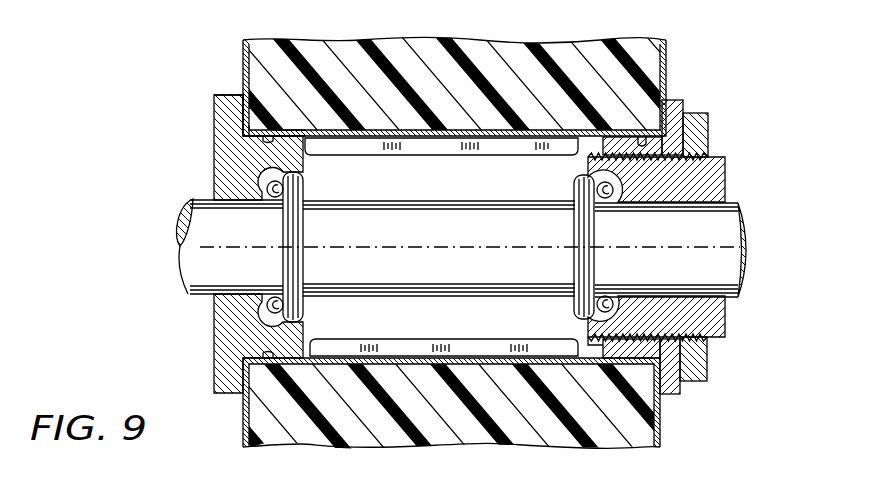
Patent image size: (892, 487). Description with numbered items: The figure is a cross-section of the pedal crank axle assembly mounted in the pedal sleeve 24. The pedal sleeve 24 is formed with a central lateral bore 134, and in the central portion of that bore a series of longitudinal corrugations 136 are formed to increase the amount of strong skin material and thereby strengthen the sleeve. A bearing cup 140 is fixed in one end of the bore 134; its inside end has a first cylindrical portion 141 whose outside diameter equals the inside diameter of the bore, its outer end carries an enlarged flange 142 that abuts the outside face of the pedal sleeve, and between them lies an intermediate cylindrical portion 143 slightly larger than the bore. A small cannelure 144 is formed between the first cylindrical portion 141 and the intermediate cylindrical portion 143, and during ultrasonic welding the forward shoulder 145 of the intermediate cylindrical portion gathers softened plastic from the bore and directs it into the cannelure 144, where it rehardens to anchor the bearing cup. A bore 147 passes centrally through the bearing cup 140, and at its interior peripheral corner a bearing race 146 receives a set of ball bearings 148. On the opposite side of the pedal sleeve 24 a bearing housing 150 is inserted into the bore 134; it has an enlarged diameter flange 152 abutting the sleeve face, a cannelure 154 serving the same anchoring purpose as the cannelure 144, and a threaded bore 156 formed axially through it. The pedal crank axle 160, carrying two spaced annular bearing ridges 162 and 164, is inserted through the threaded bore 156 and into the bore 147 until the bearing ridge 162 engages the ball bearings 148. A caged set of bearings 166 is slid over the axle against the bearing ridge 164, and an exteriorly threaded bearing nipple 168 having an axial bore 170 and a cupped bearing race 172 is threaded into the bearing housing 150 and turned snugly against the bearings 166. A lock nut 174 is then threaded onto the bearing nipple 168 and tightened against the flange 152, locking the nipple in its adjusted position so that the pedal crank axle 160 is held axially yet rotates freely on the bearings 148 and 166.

The pedal sleeve 24 is at (535, 50).
The central lateral bore 134 is at (313, 340).
The longitudinal corrugations 136 is at (453, 153).
The bearing cup 140 is at (214, 148).
The first cylindrical portion 141 is at (296, 131).
The enlarged flange 142 is at (215, 106).
The intermediate cylindrical portion 143 is at (255, 132).
The cannelure 144 is at (280, 130).
The forward shoulder 145 is at (268, 356).
The bearing race 146 is at (268, 309).
The bore 147 is at (226, 211).
The ball bearings 148 is at (271, 197).
The bearing housing 150 is at (672, 100).
The enlarged diameter flange 152 is at (691, 113).
The cannelure 154 is at (641, 136).
The threaded bore 156 is at (670, 163).
The pedal crank axle 160 is at (477, 252).
The bearing ridge 162 is at (298, 187).
The bearing ridge 164 is at (580, 190).
The bearings 166 is at (604, 296).
The bearing nipple 168 is at (719, 312).
The axial bore 170 is at (740, 205).
The cupped bearing race 172 is at (589, 336).
The lock nut 174 is at (707, 373).